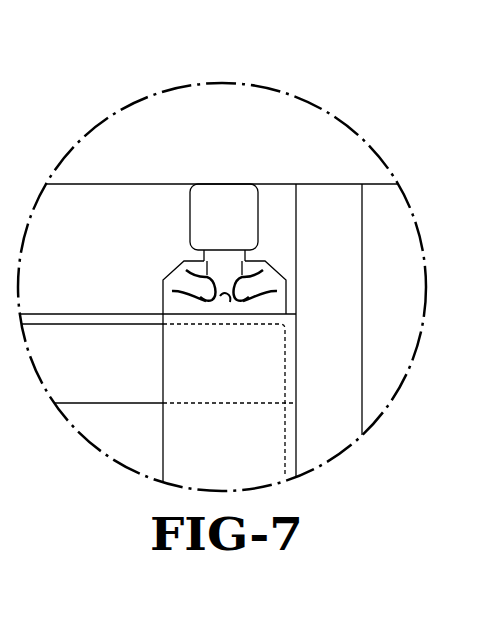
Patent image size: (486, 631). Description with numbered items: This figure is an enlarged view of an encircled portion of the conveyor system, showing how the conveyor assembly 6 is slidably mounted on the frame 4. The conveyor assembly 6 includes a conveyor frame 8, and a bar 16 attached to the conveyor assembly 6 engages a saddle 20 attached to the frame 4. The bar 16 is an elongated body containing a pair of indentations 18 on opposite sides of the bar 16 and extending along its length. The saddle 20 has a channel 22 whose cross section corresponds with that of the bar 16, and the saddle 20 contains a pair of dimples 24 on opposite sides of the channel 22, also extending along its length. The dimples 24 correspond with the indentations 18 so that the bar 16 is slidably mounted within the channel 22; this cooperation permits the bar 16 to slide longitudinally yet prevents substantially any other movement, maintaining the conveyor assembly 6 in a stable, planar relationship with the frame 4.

The frame 4 is at (368, 247).
The conveyor assembly 6 is at (160, 100).
The conveyor frame 8 is at (146, 156).
The bar 16 is at (227, 256).
The indentation 18 is at (186, 270).
The saddle 20 is at (184, 318).
The channel 22 is at (230, 302).
The dimple 24 is at (172, 291).